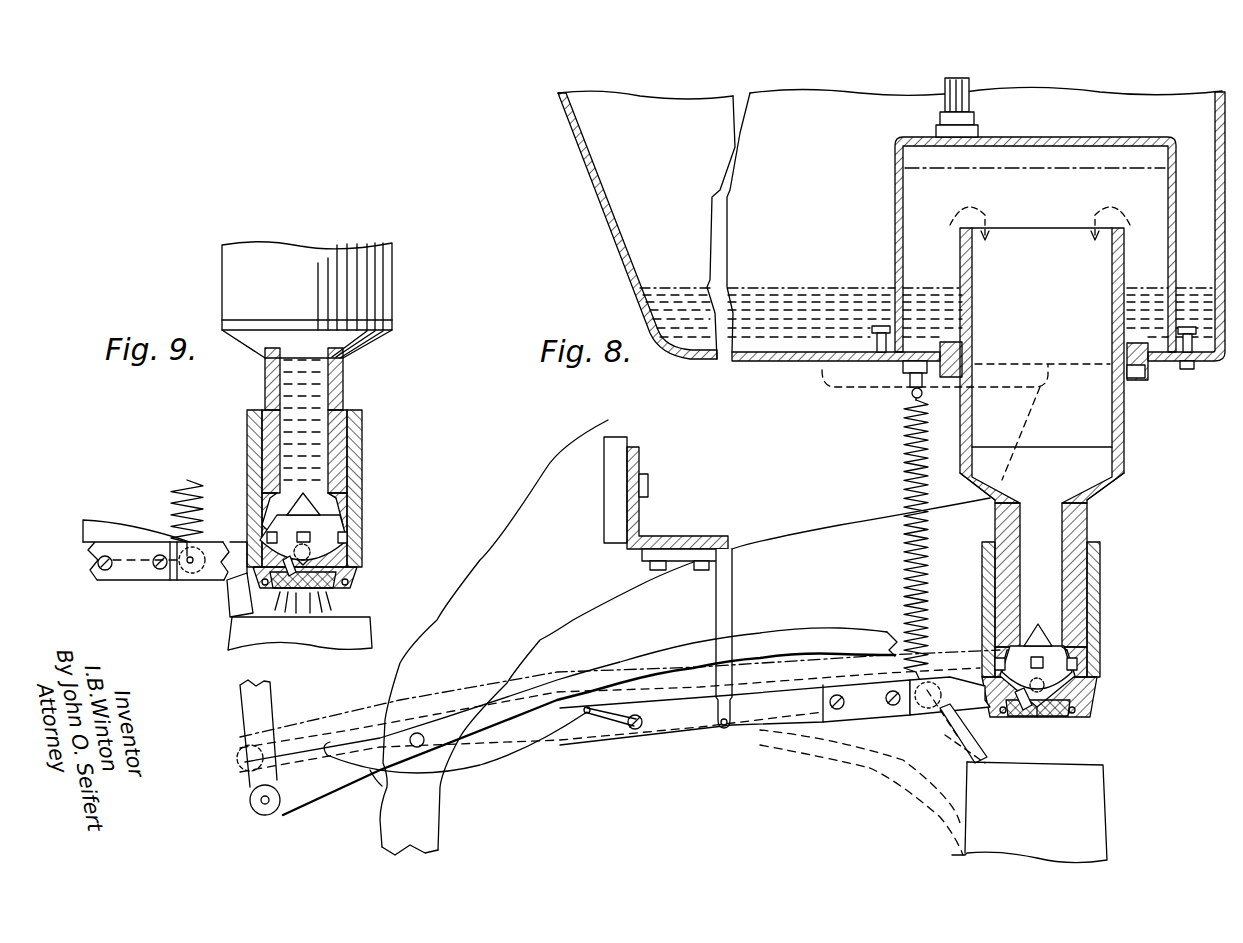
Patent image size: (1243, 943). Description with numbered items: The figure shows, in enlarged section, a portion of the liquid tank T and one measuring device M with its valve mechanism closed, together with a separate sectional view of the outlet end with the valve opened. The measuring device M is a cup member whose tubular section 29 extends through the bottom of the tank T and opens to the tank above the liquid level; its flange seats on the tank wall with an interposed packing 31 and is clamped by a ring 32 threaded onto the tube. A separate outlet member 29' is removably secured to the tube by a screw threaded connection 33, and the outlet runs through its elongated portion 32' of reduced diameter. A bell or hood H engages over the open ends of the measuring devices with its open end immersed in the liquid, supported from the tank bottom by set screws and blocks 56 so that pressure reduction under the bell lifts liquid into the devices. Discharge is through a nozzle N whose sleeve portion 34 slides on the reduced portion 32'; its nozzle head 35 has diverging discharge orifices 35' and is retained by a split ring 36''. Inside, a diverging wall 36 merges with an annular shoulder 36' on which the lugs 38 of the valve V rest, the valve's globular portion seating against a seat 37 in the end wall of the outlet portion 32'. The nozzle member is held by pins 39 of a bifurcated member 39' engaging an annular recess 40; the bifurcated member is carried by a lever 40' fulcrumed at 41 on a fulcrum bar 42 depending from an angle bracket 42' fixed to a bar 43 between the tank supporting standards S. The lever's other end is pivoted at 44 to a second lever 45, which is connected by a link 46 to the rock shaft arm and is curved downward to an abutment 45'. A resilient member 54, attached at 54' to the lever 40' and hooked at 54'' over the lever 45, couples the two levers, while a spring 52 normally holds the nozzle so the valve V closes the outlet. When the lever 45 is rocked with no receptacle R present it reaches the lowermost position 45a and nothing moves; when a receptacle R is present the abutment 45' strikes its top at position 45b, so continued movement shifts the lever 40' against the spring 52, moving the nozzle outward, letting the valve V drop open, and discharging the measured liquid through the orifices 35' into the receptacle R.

In FIG. 8, the tank T is at (598, 212).
In FIG. 8, the bell or hood H is at (895, 196).
In FIG. 8, the measuring device M is at (1036, 252).
In FIG. 8, the tank supporting standards S is at (560, 480).
In FIG. 8, the receptacle R is at (1029, 812).
In FIG. 9, the receptacle R is at (371, 626).
In FIG. 8, the valve V is at (1072, 660).
In FIG. 9, the valve V is at (345, 530).
In FIG. 8, the nozzle N is at (1092, 708).
In FIG. 9, the nozzle N is at (347, 555).
In FIG. 8, the tubular section 29 is at (1062, 365).
In FIG. 9, the tubular section 29 is at (323, 300).
In FIG. 8, the outlet member 29' is at (1074, 575).
In FIG. 9, the outlet member 29' is at (338, 414).
In FIG. 8, the packing 31 is at (1150, 368).
In FIG. 8, the ring 32 is at (1157, 385).
In FIG. 8, the elongated portion of reduced diameter 32' is at (1065, 609).
In FIG. 9, the elongated portion of reduced diameter 32' is at (330, 488).
In FIG. 8, the screw threaded connection 33 is at (1120, 478).
In FIG. 8, the sleeve portion 34 is at (1098, 622).
In FIG. 9, the sleeve portion 34 is at (362, 458).
In FIG. 8, the nozzle head 35 is at (1041, 726).
In FIG. 9, the nozzle head 35 is at (312, 605).
In FIG. 8, the discharge ports or orifices 35' is at (1028, 741).
In FIG. 9, the discharge ports or orifices 35' is at (303, 604).
In FIG. 8, the diverging wall 36 is at (1054, 697).
In FIG. 9, the diverging wall 36 is at (287, 589).
In FIG. 8, the annular seat or shoulder 36' is at (1074, 661).
In FIG. 9, the annular seat or shoulder 36' is at (359, 529).
In FIG. 8, the split ring 36'' is at (1068, 732).
In FIG. 9, the split ring 36'' is at (332, 597).
In FIG. 8, the seat 37 is at (1070, 650).
In FIG. 9, the seat 37 is at (330, 520).
In FIG. 8, the lugs 38 is at (1037, 652).
In FIG. 9, the lugs 38 is at (300, 530).
In FIG. 8, the pins 39 is at (1007, 719).
In FIG. 9, the pins 39 is at (339, 562).
In FIG. 8, the bifurcated member 39' is at (931, 717).
In FIG. 9, the bifurcated member 39' is at (229, 522).
In FIG. 8, the annular recess 40 is at (1036, 682).
In FIG. 9, the annular recess 40 is at (294, 585).
In FIG. 8, the lever 40' is at (620, 716).
In FIG. 9, the lever 40' is at (156, 577).
In FIG. 8, the fulcrum 41 is at (722, 730).
In FIG. 8, the fulcrum bar 42 is at (749, 638).
In FIG. 8, the angle bracket 42' is at (677, 508).
In FIG. 8, the bar 43 is at (604, 508).
In FIG. 8, the pivot 44 is at (422, 747).
In FIG. 8, the second lever 45 is at (571, 720).
In FIG. 9, the second lever 45 is at (152, 571).
In FIG. 8, the abutment 45' is at (957, 737).
In FIG. 9, the abutment 45' is at (216, 609).
In FIG. 8, the lowermost dotted line position 45a is at (917, 803).
In FIG. 8, the dotted line position 45b is at (905, 768).
In FIG. 8, the link 46 is at (272, 702).
In FIG. 8, the spring 52 is at (905, 588).
In FIG. 9, the spring 52 is at (172, 482).
In FIG. 8, the resilient member 54 is at (455, 755).
In FIG. 8, the attachment of resilient member 54' is at (622, 742).
In FIG. 8, the hooked end of resilient member 54'' is at (356, 794).
In FIG. 8, the set screws and blocks 56 is at (880, 352).